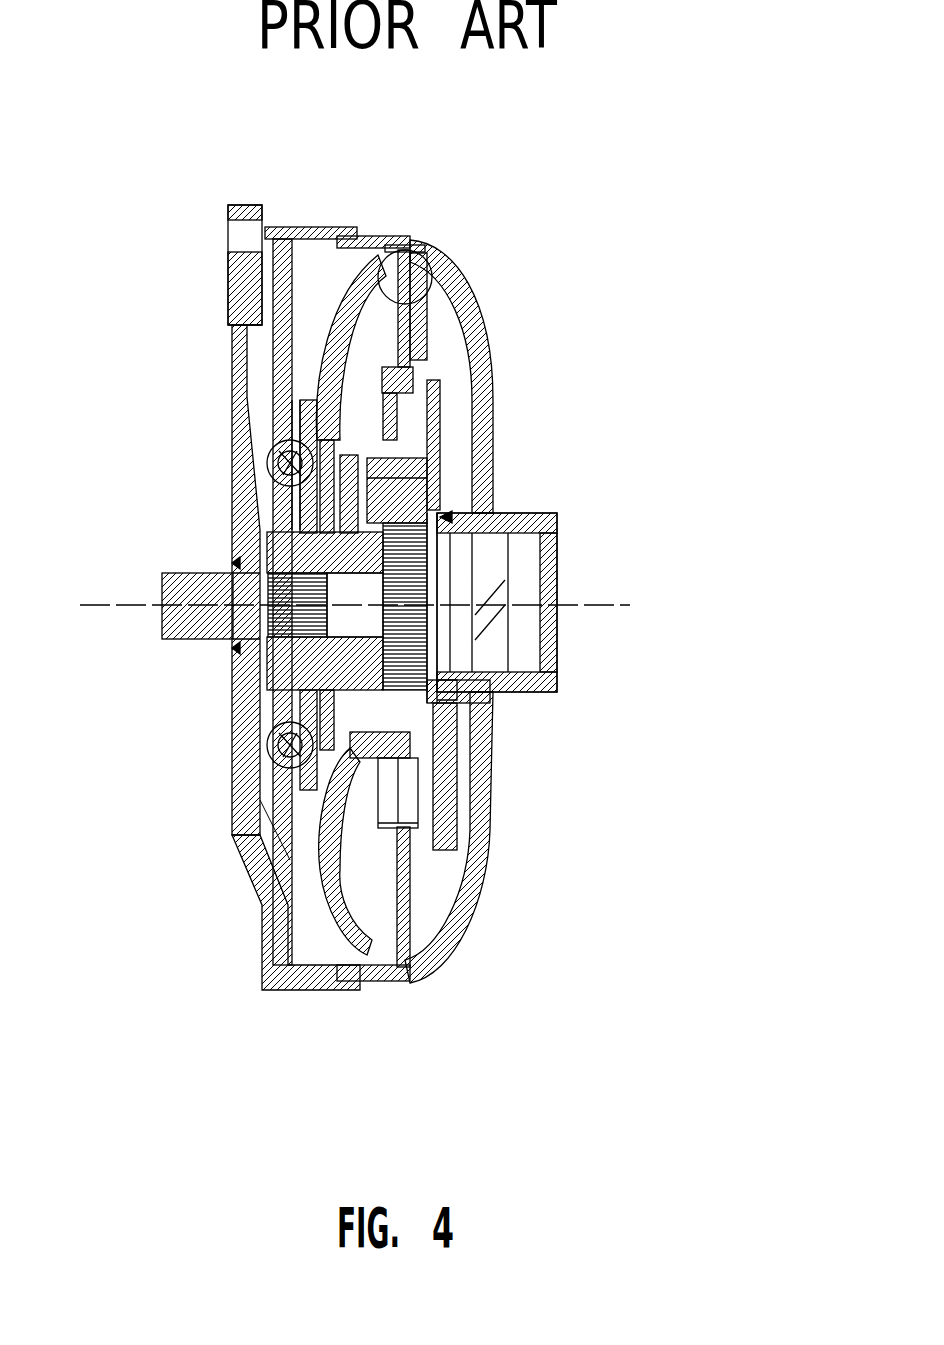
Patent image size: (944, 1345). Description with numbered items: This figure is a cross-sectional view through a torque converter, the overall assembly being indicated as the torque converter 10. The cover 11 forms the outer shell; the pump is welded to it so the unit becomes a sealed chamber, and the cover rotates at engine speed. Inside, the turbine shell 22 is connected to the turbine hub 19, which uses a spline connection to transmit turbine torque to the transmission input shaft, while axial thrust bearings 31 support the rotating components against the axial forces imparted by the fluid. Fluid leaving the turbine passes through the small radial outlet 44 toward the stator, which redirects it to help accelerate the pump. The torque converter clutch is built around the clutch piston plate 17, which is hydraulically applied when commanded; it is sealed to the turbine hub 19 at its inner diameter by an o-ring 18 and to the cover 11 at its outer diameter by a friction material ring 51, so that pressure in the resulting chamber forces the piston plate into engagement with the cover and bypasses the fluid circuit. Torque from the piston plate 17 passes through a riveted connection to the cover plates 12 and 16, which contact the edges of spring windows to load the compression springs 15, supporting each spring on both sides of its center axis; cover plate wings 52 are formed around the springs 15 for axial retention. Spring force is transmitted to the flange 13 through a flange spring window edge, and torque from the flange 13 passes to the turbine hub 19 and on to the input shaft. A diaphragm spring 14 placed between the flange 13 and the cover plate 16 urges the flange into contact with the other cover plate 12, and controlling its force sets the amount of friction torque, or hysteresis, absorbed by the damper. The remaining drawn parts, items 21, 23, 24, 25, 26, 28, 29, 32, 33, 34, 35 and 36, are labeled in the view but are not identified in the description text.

The torque transmission device 10 is at (493, 257).
The cover 11 is at (233, 380).
The cover plate 12 is at (275, 420).
The flange 13 is at (275, 835).
The diaphragm spring 14 is at (285, 515).
The compression springs 15 is at (285, 745).
The cover plate 16 is at (283, 432).
The piston plate 17 is at (240, 353).
The o-ring 18 is at (292, 660).
The turbine hub 19 is at (290, 657).
The spring 21 is at (350, 735).
The turbine shell 22 is at (278, 232).
The coil spring 23 is at (338, 285).
The pin 24 is at (425, 255).
The flange 25 is at (433, 430).
The cover plate 26 is at (432, 717).
The bearing 28 is at (450, 680).
The hub flange 29 is at (445, 520).
The axial thrust bearings 31 is at (450, 503).
The spring seat 32 is at (428, 262).
The cover 33 is at (450, 313).
The outer ring 34 is at (455, 268).
The output hub 35 is at (537, 515).
The bore 36 is at (493, 558).
The small radial outlet 44 is at (383, 797).
The friction material ring 51 is at (275, 932).
The cover plate wings 52 is at (268, 800).